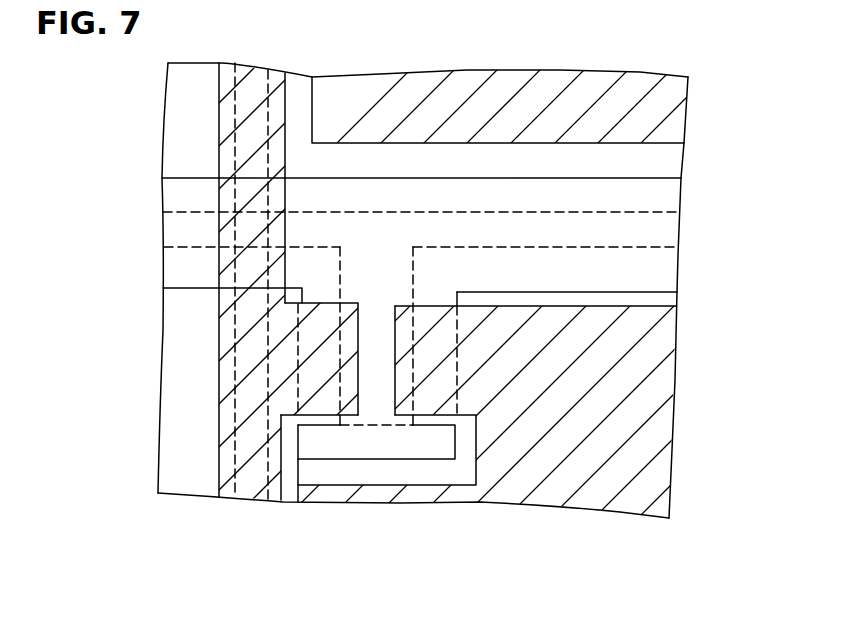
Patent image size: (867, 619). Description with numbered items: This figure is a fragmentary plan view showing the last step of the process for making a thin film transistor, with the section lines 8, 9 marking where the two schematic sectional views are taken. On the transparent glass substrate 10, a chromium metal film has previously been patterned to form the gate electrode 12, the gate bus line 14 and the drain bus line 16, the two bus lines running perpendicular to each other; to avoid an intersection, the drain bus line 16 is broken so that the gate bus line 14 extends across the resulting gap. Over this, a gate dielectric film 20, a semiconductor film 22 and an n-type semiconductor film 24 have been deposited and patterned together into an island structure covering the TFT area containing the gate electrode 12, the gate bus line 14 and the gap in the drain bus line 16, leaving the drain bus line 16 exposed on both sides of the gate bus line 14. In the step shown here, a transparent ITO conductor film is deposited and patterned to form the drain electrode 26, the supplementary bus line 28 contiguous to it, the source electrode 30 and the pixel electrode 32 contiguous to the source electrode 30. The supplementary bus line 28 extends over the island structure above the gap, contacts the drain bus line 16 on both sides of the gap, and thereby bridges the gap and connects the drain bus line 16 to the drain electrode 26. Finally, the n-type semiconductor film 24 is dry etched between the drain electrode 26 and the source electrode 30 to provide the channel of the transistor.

The transparent glass substrate 10 is at (660, 163).
The gate electrode 12 is at (373, 323).
The gate bus line 14 is at (657, 242).
The drain bus line 16 is at (240, 98).
The gate dielectric film 20 is at (378, 457).
The semiconductor film 22 is at (320, 450).
The n-type semiconductor film 24 is at (378, 490).
The drain electrode 26 is at (352, 307).
The supplementary bus line 28 is at (250, 262).
The source electrode 30 is at (425, 317).
The pixel electrode 32 is at (630, 383).
The section line 8— 8 is at (272, 380).
The section line 9— 9 is at (268, 189).